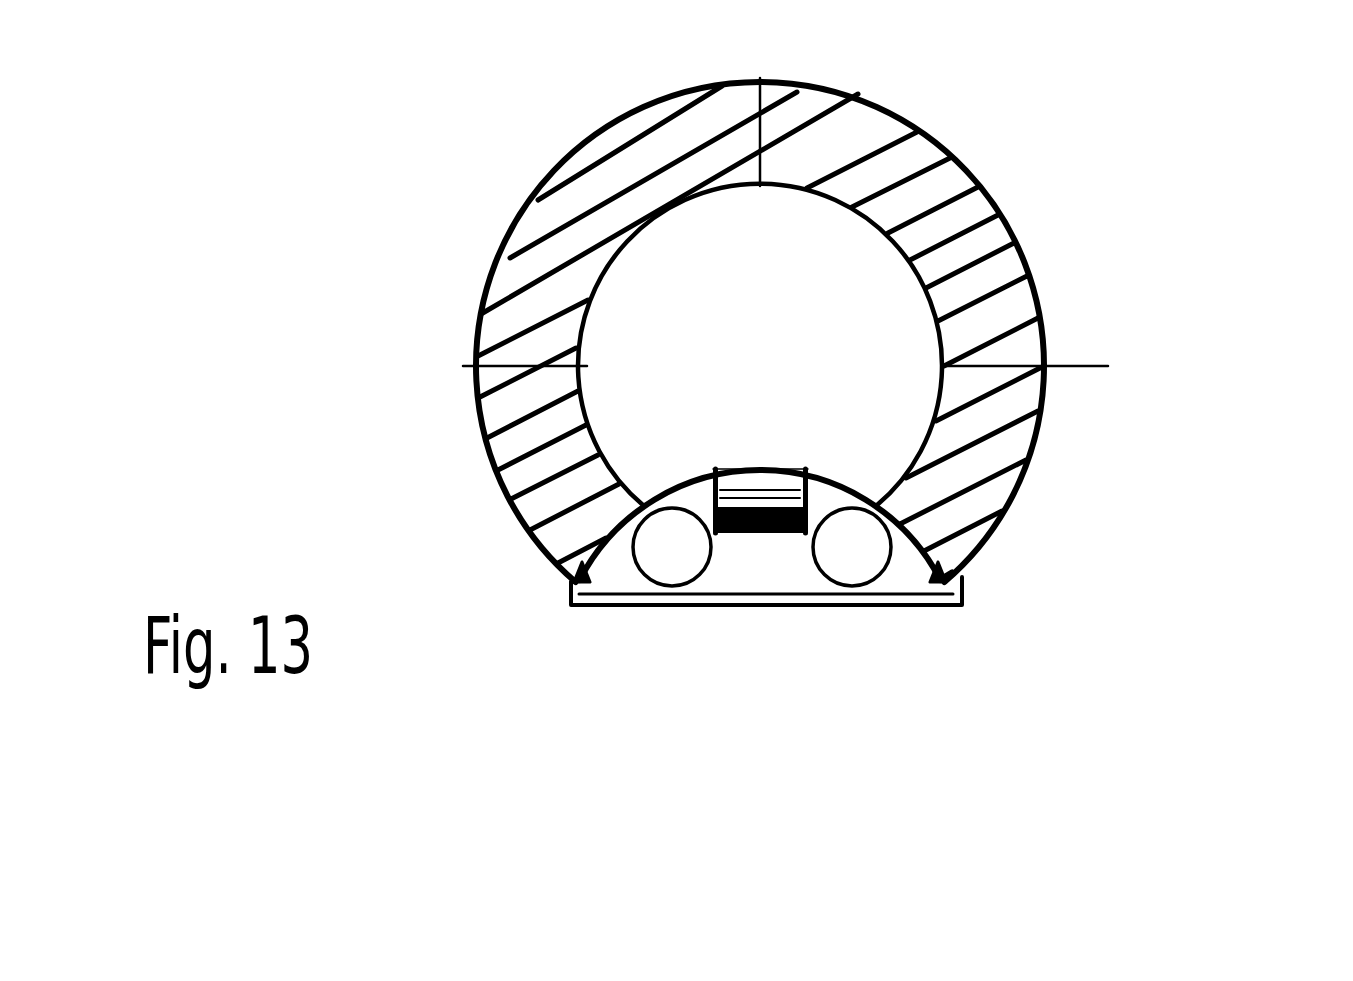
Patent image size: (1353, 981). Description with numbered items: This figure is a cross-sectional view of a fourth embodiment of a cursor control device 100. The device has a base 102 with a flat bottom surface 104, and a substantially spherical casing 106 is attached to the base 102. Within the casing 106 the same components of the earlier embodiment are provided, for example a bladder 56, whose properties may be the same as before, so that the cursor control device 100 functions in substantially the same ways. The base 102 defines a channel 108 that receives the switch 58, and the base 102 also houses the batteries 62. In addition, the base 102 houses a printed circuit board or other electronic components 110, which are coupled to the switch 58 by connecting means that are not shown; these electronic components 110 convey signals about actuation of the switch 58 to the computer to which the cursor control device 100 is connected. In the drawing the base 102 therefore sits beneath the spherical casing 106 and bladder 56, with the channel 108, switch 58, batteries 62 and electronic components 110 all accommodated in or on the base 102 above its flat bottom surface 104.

The cursor control device 100 is at (375, 260).
The substantially spherical casing 106 is at (983, 288).
The bladder 56 is at (850, 282).
The switch 58 is at (725, 508).
The batteries 62 is at (865, 548).
The channel 108 is at (716, 528).
The flat bottom surface 104 is at (608, 610).
The printed circuit board or other electronic components 110 is at (907, 588).
The base 102 is at (568, 588).